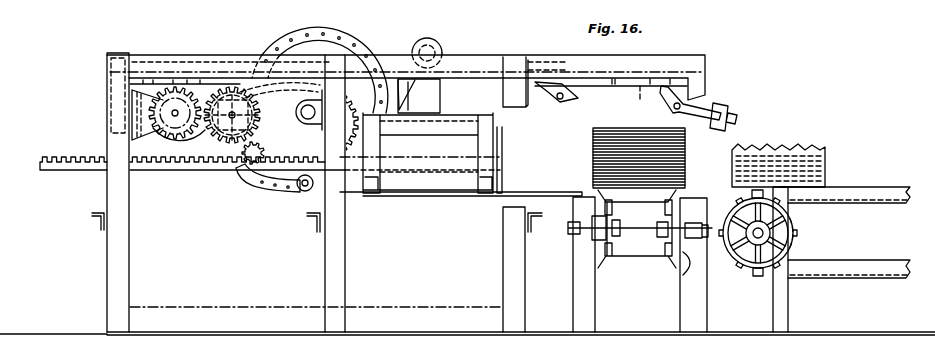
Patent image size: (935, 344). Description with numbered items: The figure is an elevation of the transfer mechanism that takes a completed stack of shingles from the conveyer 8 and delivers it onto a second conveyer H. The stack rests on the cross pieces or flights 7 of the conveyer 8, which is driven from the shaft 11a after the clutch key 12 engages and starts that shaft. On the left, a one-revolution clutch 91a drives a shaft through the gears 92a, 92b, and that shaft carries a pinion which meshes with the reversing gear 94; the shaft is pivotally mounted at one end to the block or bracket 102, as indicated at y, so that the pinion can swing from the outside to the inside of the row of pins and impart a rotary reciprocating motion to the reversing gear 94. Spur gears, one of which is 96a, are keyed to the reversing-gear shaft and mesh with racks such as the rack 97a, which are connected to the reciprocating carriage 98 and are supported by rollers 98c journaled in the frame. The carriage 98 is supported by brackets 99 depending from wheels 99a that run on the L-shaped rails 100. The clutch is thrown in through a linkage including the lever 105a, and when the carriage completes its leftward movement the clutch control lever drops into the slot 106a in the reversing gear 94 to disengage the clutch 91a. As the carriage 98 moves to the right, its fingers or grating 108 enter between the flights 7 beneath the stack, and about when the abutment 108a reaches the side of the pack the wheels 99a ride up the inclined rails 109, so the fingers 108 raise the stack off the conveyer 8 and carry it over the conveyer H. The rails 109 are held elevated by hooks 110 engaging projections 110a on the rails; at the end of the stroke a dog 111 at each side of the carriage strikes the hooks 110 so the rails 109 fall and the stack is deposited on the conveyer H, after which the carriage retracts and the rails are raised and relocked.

The rack 97a is at (65, 166).
The block or bracket 102 is at (201, 164).
The gear 92a is at (168, 88).
The clutch 91a is at (172, 146).
The spur gear 96a is at (272, 140).
The gear 92b is at (217, 160).
The pivot mounting of shaft y is at (245, 114).
The reversing gear 94 is at (255, 190).
The roller 98c is at (301, 192).
The slot 106a is at (326, 32).
The lever 105a is at (206, 88).
The dog 111 is at (396, 82).
The bracket 99 is at (430, 96).
The wheel 99a is at (437, 45).
The rail 100 is at (546, 62).
The rail 109 is at (643, 72).
The hook 110 is at (672, 103).
The projection 110a is at (620, 88).
The clutch key 12 is at (730, 112).
The reciprocating carriage 98 is at (448, 168).
The abutment 108a is at (503, 149).
The fingers or grating 108 is at (536, 192).
The cross pieces or flights 7 is at (630, 268).
The shaft 11a is at (640, 229).
The conveyer 8 is at (680, 277).
The conveyer H is at (865, 186).